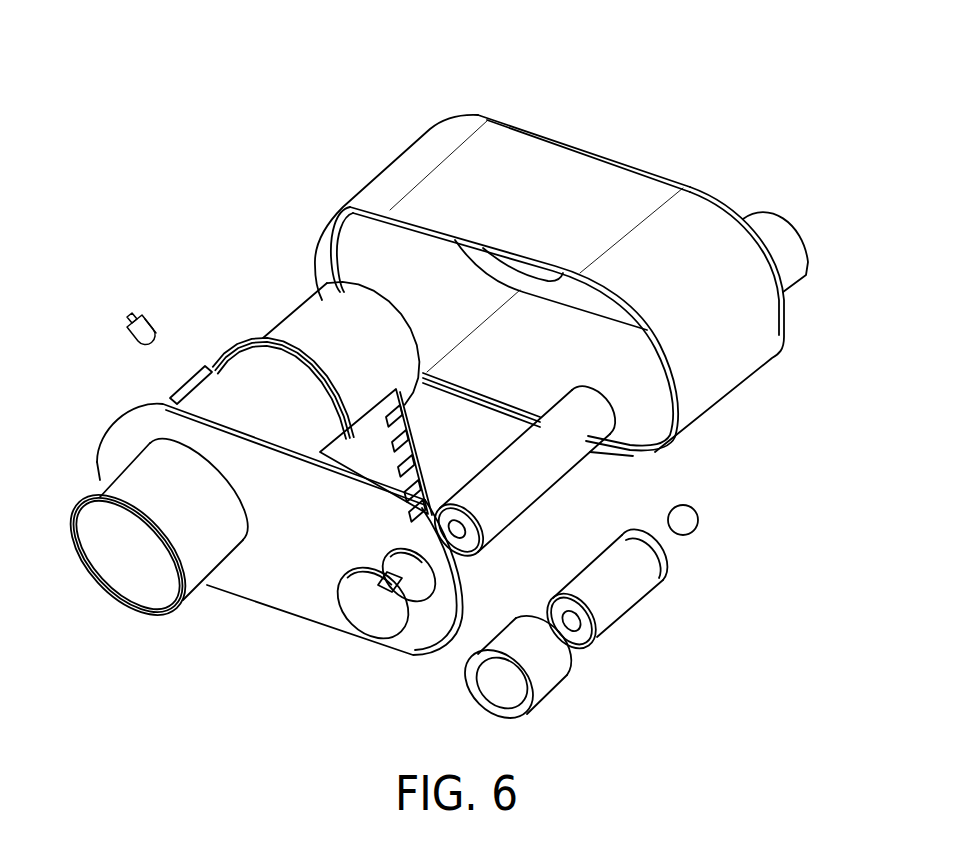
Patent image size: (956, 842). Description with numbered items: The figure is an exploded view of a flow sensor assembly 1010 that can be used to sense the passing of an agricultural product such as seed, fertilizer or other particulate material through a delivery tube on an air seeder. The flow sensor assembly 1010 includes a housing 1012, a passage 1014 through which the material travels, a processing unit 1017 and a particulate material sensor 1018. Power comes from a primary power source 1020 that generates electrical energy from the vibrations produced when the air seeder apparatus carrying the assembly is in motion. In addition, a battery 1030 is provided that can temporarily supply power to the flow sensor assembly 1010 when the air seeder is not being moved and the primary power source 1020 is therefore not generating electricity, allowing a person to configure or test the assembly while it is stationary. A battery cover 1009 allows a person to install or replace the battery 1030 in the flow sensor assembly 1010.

The flow sensor assembly 1010 is at (537, 87).
The housing 1012 is at (602, 178).
The passage 1014 is at (94, 585).
The processing unit 1017 is at (370, 440).
The particulate material sensor 1018 is at (127, 341).
The primary power source 1020 is at (696, 611).
The battery 1030 is at (577, 463).
The battery cover 1009 is at (372, 612).